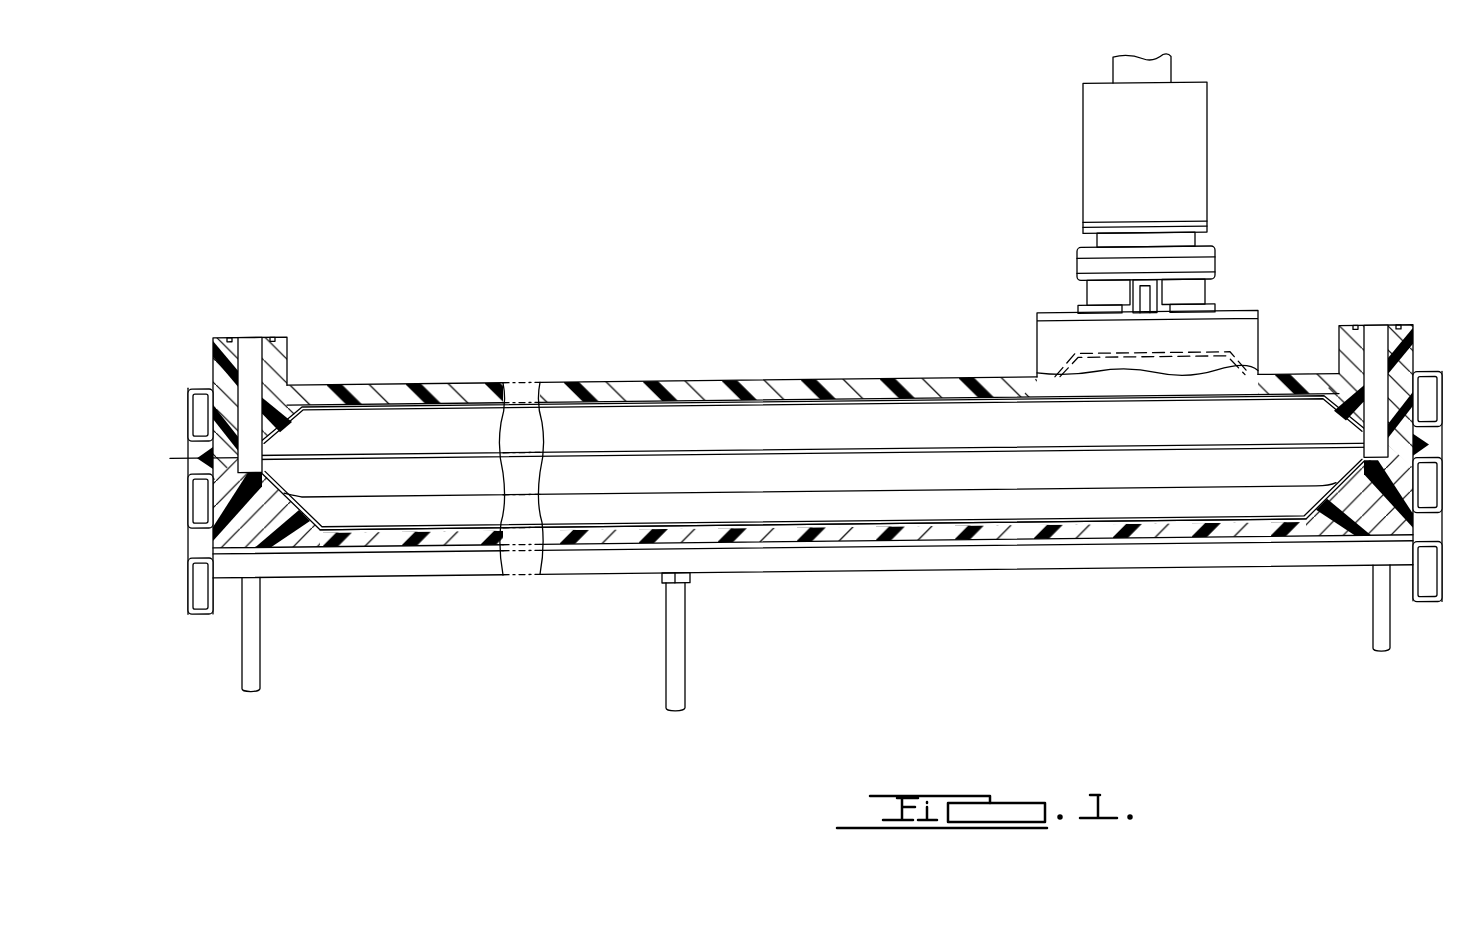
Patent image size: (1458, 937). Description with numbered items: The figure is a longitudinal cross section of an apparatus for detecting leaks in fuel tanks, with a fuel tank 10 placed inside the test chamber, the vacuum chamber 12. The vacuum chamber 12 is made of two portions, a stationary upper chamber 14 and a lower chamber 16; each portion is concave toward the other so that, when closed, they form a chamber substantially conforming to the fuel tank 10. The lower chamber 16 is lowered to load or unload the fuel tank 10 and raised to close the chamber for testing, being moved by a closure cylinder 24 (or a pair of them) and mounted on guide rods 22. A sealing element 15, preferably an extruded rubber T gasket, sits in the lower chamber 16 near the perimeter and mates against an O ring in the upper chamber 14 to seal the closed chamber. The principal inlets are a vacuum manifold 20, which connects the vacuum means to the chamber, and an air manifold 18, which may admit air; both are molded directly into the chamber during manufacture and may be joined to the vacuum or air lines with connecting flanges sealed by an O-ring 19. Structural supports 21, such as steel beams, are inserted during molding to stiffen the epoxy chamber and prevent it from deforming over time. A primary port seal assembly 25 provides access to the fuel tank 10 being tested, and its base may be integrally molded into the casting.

The fuel tank 10 is at (752, 425).
The vacuum chamber 12 is at (658, 284).
The upper chamber 14 is at (388, 387).
The sealing element 15 is at (190, 457).
The lower chamber 16 is at (440, 532).
The air manifold 18 is at (1390, 342).
The O-ring 19 is at (223, 337).
The vacuum manifold 20 is at (250, 338).
The structural supports 21 is at (200, 500).
The guide rods 22 is at (262, 660).
The closure cylinder 24 is at (680, 629).
The primary port seal assembly 25 is at (1200, 172).